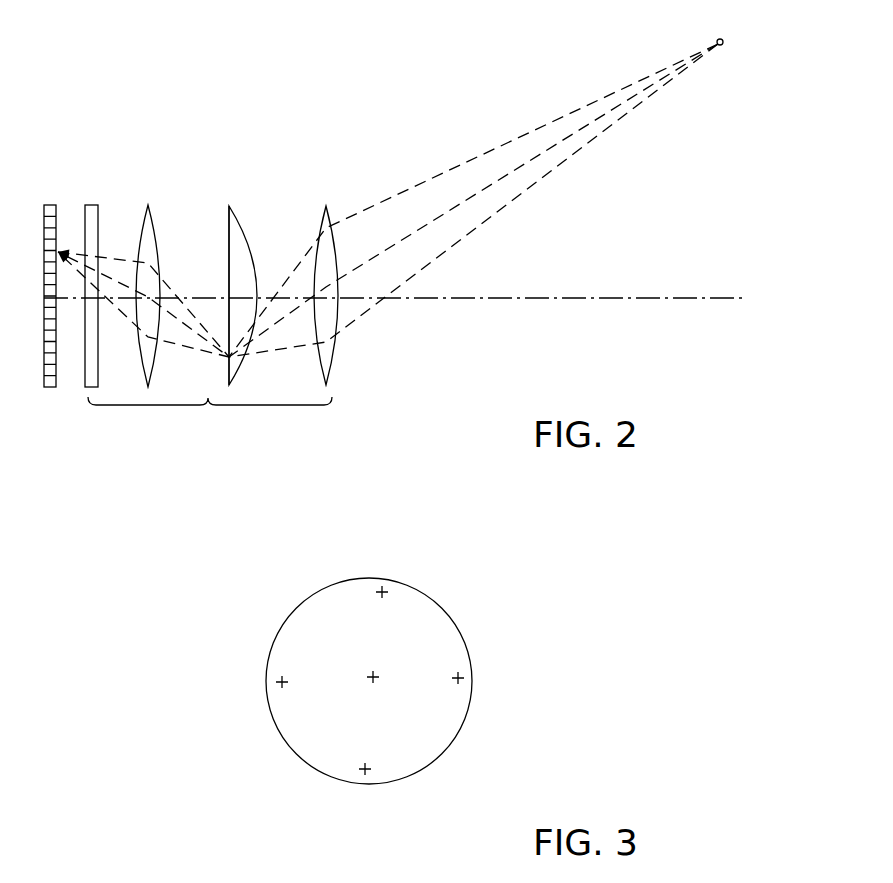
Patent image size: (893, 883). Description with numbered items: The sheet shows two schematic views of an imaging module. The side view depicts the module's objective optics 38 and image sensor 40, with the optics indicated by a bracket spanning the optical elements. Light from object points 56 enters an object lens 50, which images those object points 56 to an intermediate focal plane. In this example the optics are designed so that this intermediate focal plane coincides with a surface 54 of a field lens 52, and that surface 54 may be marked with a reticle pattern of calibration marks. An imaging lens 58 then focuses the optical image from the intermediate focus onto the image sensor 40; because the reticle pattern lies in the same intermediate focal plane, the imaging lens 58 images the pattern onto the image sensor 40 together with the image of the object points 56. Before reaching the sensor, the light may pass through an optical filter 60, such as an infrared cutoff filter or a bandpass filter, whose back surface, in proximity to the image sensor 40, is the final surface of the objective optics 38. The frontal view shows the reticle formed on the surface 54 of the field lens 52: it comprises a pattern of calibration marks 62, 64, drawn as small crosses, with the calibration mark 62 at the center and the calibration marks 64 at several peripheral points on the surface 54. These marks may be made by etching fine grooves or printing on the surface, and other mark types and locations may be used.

In FIG. 2, the objective optics 38 is at (210, 417).
In FIG. 2, the image sensor 40 is at (50, 205).
In FIG. 2, the object lens 50 is at (335, 370).
In FIG. 2, the field lens 52 is at (240, 225).
In FIG. 2, the surface of field lens 54 is at (226, 208).
In FIG. 3, the surface of field lens 54 is at (443, 625).
In FIG. 2, the object points 56 is at (724, 42).
In FIG. 2, the imaging lens 58 is at (148, 205).
In FIG. 2, the optical filter 60 is at (90, 205).
In FIG. 3, the calibration mark 62 is at (372, 684).
In FIG. 3, the calibration marks 64 is at (381, 582).